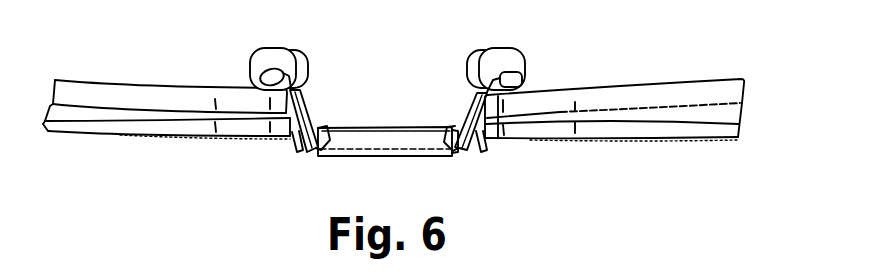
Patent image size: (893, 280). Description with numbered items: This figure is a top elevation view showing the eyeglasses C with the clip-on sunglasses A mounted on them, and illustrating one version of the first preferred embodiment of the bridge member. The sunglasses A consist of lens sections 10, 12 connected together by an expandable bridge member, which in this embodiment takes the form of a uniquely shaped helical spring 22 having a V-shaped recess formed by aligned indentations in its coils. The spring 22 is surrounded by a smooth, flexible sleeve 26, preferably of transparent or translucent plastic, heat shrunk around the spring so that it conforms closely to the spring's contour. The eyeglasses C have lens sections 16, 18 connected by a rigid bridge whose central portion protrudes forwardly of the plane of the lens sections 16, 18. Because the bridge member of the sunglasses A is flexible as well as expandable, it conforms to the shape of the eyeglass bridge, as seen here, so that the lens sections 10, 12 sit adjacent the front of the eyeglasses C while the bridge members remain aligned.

The lens section 10 is at (153, 141).
The lens section 12 is at (680, 140).
The lens section 16 is at (124, 95).
The lens section 18 is at (702, 90).
The helical spring 22 is at (290, 144).
The sleeve 26 is at (377, 141).
The clip-on sunglasses A is at (84, 158).
The eyeglasses C is at (754, 75).